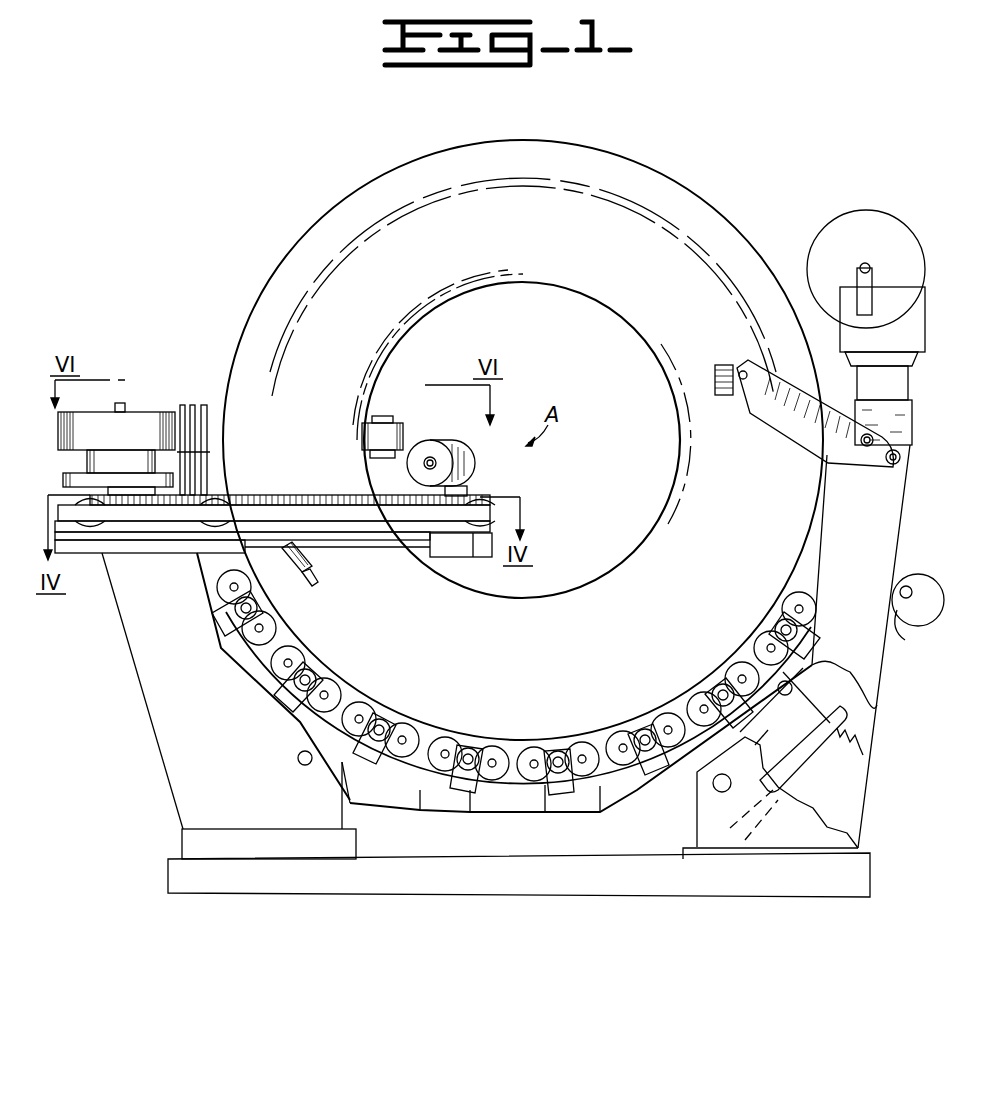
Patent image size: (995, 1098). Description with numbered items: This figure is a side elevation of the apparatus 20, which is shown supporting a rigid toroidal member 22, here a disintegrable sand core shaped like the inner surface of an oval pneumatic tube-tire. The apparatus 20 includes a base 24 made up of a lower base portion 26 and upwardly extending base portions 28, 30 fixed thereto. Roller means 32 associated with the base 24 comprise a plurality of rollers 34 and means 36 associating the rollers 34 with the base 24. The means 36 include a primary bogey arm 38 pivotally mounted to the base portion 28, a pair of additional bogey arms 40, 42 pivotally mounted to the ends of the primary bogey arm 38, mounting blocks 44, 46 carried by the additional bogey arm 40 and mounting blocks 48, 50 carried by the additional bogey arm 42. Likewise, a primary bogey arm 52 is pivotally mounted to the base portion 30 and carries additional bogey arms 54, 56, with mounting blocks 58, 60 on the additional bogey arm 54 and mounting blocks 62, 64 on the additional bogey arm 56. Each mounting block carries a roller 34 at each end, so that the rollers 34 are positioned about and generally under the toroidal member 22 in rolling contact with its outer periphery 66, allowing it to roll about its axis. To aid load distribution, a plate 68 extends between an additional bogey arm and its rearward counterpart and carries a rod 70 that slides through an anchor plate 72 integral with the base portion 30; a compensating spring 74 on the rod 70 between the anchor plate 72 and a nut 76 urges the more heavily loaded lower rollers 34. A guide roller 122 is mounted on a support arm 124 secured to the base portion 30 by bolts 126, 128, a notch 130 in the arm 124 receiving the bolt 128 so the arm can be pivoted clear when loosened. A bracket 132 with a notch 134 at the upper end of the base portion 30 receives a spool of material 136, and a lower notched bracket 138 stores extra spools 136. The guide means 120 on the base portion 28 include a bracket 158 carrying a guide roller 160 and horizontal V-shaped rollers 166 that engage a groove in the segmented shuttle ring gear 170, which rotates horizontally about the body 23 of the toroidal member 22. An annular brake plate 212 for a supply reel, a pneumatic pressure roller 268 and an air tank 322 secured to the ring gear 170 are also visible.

The apparatus 20 is at (150, 765).
The toroidal member 22 is at (526, 218).
The body 23 is at (268, 285).
The base 24 is at (210, 900).
The lower base portion 26 is at (330, 896).
The base portion 28 is at (243, 769).
The base portion 30 is at (872, 559).
The roller means 32 is at (520, 810).
The rollers 34 is at (270, 628).
The means associating the rollers with the base 36 is at (633, 818).
The primary bogey arm 38 is at (362, 790).
The additional bogey arm 40 is at (265, 682).
The additional bogey arm 42 is at (450, 814).
The mounting block 44 is at (236, 598).
The mounting block 46 is at (300, 670).
The mounting block 48 is at (395, 748).
The mounting block 50 is at (488, 762).
The primary bogey arm 52 is at (674, 810).
The additional bogey arm 54 is at (572, 808).
The additional bogey arm 56 is at (812, 640).
The mounting block 58 is at (556, 760).
The mounting block 60 is at (625, 745).
The mounting block 62 is at (705, 692).
The mounting block 64 is at (768, 640).
The outer periphery 66 is at (345, 195).
The plate 68 is at (808, 655).
The rod 70 is at (812, 700).
The anchor plate 72 is at (795, 768).
The compensating spring 74 is at (858, 733).
The nut 76 is at (872, 760).
The guide means 120 is at (275, 523).
The guide roller 122 is at (718, 385).
The support arm 124 is at (780, 420).
The bolt 126 is at (862, 445).
The bolt 128 is at (890, 465).
The notch 130 is at (905, 440).
The bracket 132 is at (858, 300).
The notch 134 is at (868, 265).
The spool of material 136 is at (825, 225).
The notched bracket 138 is at (907, 606).
The bracket 158 is at (305, 545).
The guide roller 160 is at (316, 580).
The rollers 166 is at (212, 512).
The segmented shuttle ring gear 170 is at (180, 420).
The annular brake plate 212 is at (118, 480).
The pneumatic pressure roller 268 is at (372, 437).
The air tank 322 is at (462, 470).